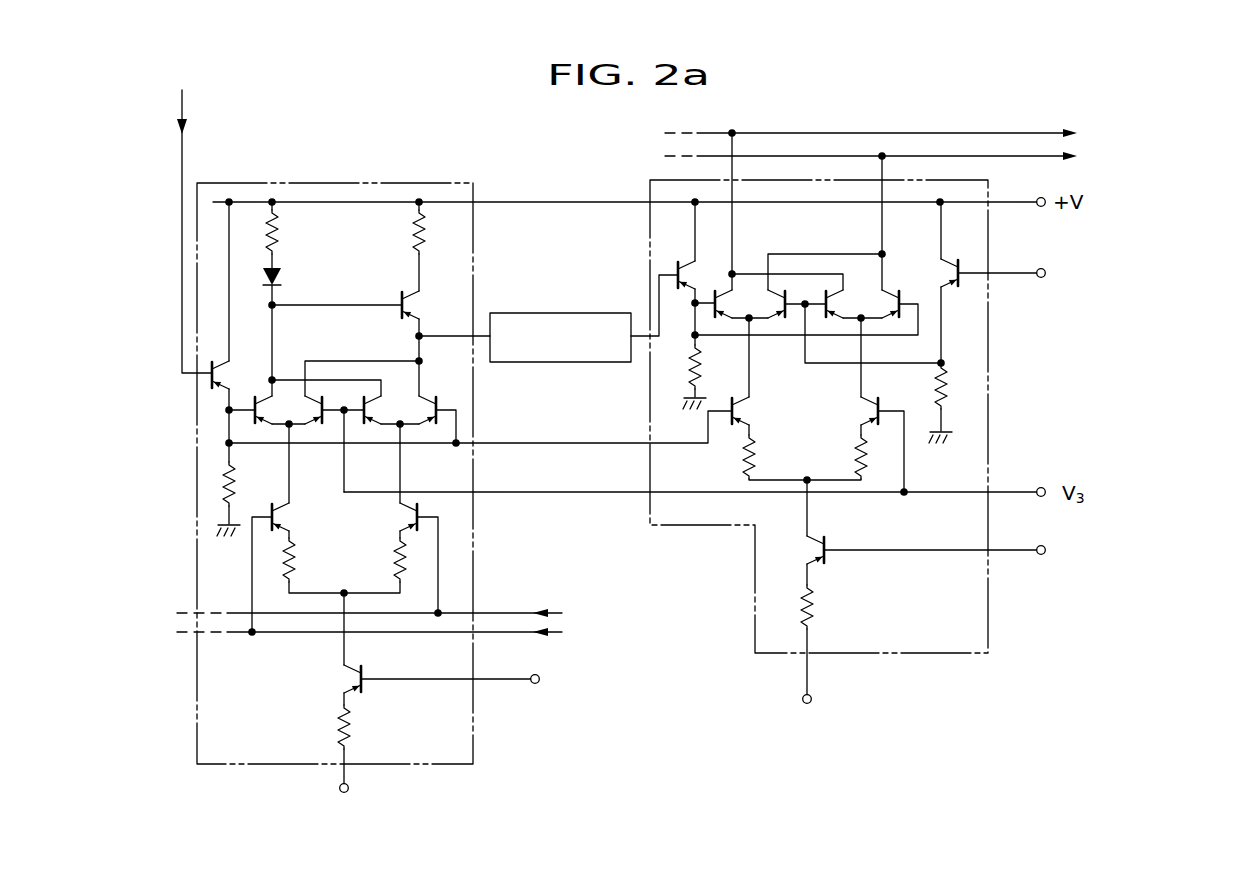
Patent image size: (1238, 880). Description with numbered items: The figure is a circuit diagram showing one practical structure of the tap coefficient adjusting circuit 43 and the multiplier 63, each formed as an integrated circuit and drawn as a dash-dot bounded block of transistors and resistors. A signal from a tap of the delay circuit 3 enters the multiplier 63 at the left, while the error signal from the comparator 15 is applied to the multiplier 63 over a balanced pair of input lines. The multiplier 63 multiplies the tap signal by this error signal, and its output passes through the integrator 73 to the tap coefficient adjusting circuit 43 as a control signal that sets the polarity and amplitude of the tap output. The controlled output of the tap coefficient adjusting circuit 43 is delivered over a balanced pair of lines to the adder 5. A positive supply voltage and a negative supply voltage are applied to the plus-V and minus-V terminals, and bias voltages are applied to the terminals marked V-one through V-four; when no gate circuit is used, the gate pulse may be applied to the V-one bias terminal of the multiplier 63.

The multiplier 63 is at (371, 183).
The tap coefficient adjusting circuit 43 is at (659, 180).
The integrator 73 is at (541, 313).
The delay circuit 3 is at (194, 206).
The adder 5 is at (939, 140).
The comparator 15 is at (454, 625).